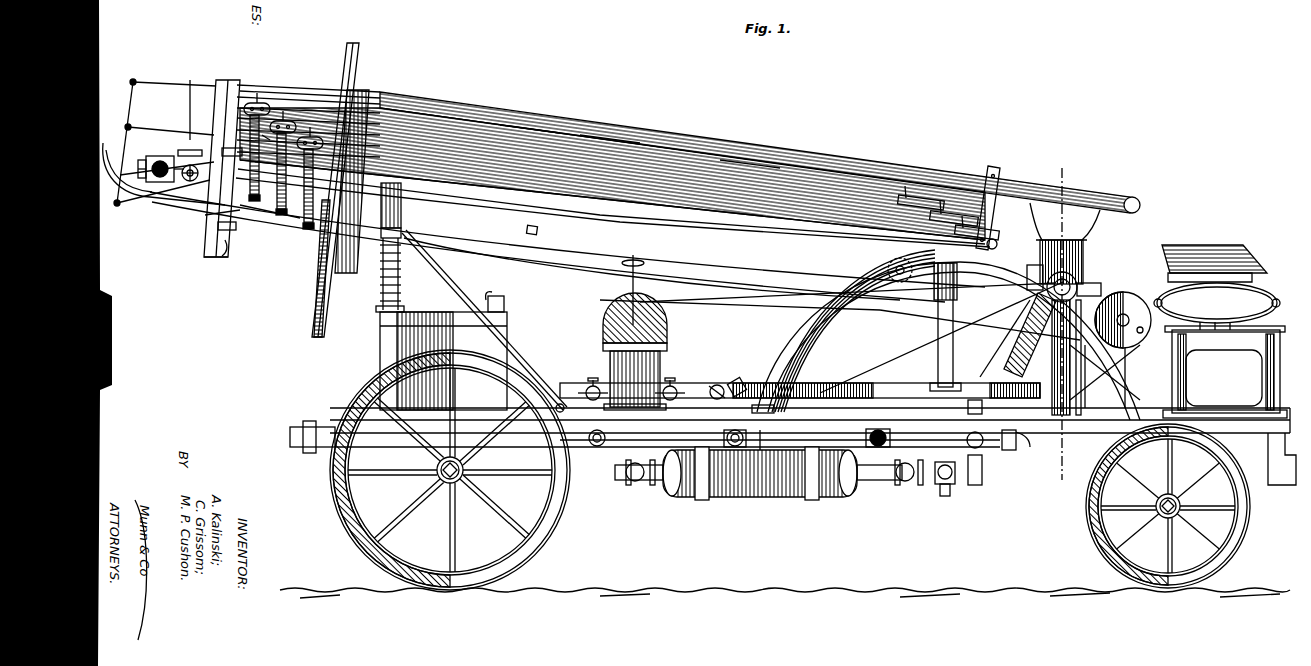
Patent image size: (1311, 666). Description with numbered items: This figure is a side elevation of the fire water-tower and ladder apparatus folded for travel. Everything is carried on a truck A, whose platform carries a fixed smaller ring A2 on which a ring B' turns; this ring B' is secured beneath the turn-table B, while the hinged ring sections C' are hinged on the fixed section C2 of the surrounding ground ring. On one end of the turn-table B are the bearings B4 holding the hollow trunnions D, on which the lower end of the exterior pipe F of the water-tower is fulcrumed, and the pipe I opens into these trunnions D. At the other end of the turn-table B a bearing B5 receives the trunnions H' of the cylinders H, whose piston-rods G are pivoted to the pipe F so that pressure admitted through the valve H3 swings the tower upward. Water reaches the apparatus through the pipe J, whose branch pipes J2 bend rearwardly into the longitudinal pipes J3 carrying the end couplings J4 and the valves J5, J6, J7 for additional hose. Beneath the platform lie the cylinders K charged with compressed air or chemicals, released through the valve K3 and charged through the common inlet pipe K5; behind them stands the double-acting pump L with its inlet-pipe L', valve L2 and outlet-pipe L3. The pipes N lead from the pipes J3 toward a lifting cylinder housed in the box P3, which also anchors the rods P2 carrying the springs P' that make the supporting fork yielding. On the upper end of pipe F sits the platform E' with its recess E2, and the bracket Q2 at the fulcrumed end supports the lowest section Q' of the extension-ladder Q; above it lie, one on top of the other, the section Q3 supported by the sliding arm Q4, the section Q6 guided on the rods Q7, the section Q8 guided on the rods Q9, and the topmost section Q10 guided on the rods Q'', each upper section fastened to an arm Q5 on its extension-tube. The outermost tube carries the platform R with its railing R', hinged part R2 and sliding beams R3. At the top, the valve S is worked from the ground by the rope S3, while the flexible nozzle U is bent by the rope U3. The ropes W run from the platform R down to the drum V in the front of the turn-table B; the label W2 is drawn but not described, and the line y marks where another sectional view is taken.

The ladder section Q' is at (688, 149).
The extension-ladder Q is at (611, 173).
The rods Q9 is at (530, 145).
The ladder section Q8 is at (600, 152).
The rods Q7 is at (748, 187).
The ladder section Q6 is at (843, 205).
The ladder section Q3 is at (445, 235).
The arm Q4 is at (993, 172).
The rods Q'' is at (283, 147).
The ladder section Q10 is at (300, 95).
The arm or bracket Q5 is at (270, 145).
The platform E' is at (544, 190).
The exterior pipe F is at (392, 195).
The platform R is at (223, 154).
The railing R' is at (165, 133).
The ropes W is at (190, 80).
The flexible nozzle U is at (164, 166).
The valve S is at (156, 185).
The inlet-pipe L' is at (190, 147).
The rope S3 is at (346, 254).
The hinged part R2 is at (205, 245).
The beams R3 is at (226, 250).
The rope U3 is at (270, 250).
The recess E2 is at (534, 232).
The bracket Q2 is at (447, 258).
The hollow trunnions D is at (1078, 282).
The bearings B4 is at (1100, 287).
The section line y y is at (1064, 318).
The springs P' is at (386, 275).
The rods P2 is at (382, 335).
The box P3 is at (509, 300).
The pipes N is at (570, 335).
The couplings J4 is at (306, 427).
The ring B' is at (813, 446).
The pipe J is at (667, 440).
The valve J7 is at (597, 446).
The valve J6 is at (715, 437).
The pipes J3 is at (771, 440).
The valve J5 is at (862, 437).
The pipes J2 is at (1006, 444).
The double-acting pump L is at (623, 332).
The valve L2 is at (594, 385).
The outlet-pipe L3 is at (674, 384).
The valve H3 is at (718, 380).
The cylinders K is at (760, 473).
The common pipe K5 is at (662, 508).
The valve K3 is at (900, 482).
The turn-table B is at (800, 380).
The bearing B5 is at (815, 345).
The cylinders H is at (853, 331).
The piston-rods G is at (901, 277).
The fixed ring section C2 is at (956, 292).
The hinged ring sections C' is at (851, 337).
The rod W2 is at (840, 298).
The pipe I is at (1003, 404).
The drum V is at (1128, 312).
The trunnions H' is at (1220, 331).
The truck A is at (1142, 506).
The ring A2 is at (450, 470).